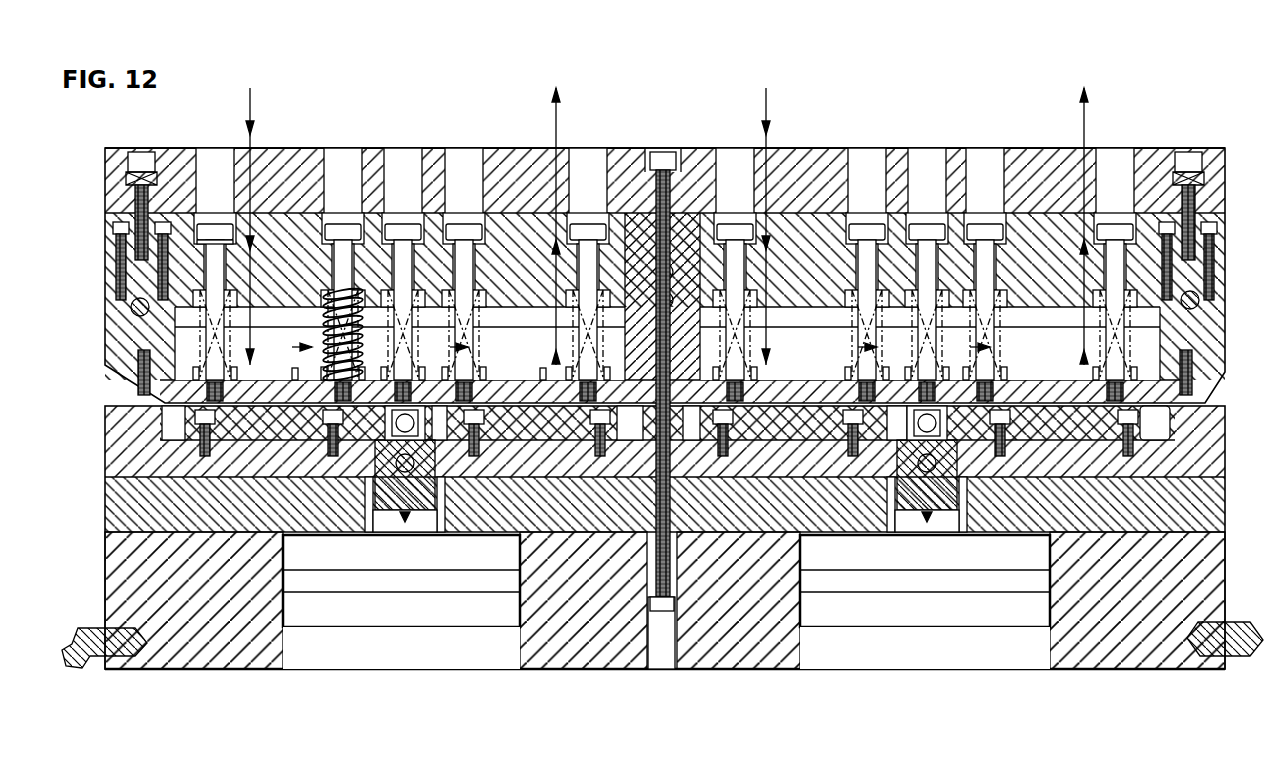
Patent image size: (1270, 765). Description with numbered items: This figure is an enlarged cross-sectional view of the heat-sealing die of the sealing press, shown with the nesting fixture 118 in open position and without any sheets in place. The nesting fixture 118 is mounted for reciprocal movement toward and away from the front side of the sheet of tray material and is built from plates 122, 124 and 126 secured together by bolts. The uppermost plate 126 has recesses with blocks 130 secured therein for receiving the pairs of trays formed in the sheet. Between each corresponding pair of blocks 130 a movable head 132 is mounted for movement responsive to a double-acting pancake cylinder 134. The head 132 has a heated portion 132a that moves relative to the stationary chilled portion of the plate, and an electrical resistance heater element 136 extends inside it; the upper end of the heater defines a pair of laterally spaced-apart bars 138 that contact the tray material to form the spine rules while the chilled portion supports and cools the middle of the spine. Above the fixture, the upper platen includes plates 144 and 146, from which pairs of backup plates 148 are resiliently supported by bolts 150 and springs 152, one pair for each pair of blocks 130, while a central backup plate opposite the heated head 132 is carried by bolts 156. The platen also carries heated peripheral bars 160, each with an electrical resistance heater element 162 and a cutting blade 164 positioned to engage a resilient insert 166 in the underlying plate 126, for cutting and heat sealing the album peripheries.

The nesting fixture 118 is at (104, 571).
The plate 122 is at (106, 598).
The plate 124 is at (106, 502).
The uppermost plate 126 is at (106, 449).
The block 130 is at (285, 424).
The movable head 132 is at (418, 524).
The heated portion 132a is at (404, 515).
The double-acting pancake cylinder 134 is at (420, 605).
The electrical resistance heater element 136 is at (382, 492).
The bars 138 is at (385, 455).
The plate 144 is at (110, 183).
The plate 146 is at (209, 238).
The backup plate 148 is at (298, 383).
The bolt 150 is at (218, 224).
The spring 152 is at (322, 318).
The bolt 156 is at (406, 224).
The heated peripheral bar 160 is at (113, 267).
The electrical resistance heater element 162 is at (131, 307).
The cutting blade 164 is at (150, 386).
The resilient insert 166 is at (165, 410).